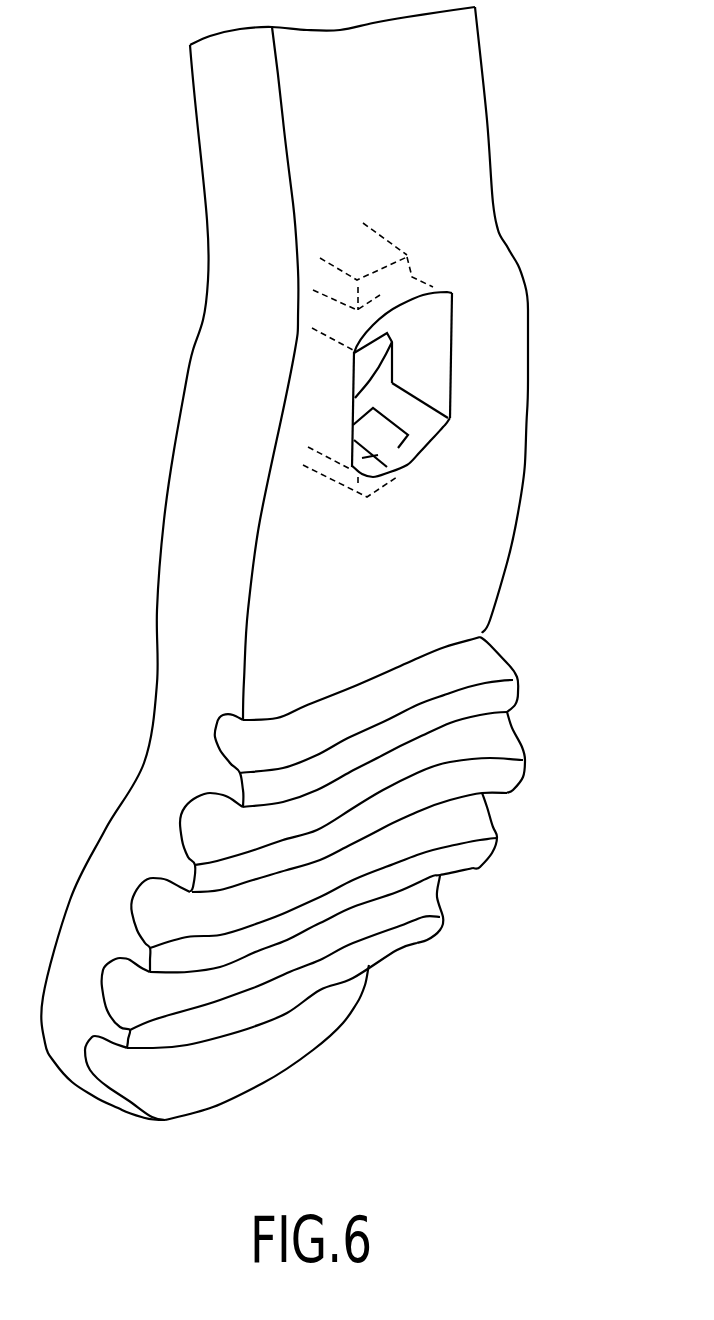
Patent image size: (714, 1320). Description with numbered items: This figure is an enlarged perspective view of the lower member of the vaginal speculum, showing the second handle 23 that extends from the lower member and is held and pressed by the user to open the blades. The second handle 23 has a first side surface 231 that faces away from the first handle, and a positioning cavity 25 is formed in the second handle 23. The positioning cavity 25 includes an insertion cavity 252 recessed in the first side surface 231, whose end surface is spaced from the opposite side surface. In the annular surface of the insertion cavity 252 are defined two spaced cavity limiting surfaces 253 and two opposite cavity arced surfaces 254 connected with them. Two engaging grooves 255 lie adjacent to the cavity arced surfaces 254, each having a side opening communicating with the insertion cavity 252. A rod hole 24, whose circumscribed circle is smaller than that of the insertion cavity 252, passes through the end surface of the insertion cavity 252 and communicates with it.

The second handle 23 is at (503, 119).
The first side surface 231 is at (468, 203).
The positioning cavity 25 is at (472, 297).
The rod hole 24 is at (365, 369).
The insertion cavity 252 is at (452, 341).
The cavity limiting surface 253 is at (440, 375).
The cavity arced surface 254 is at (430, 428).
The engaging groove 255 is at (365, 457).